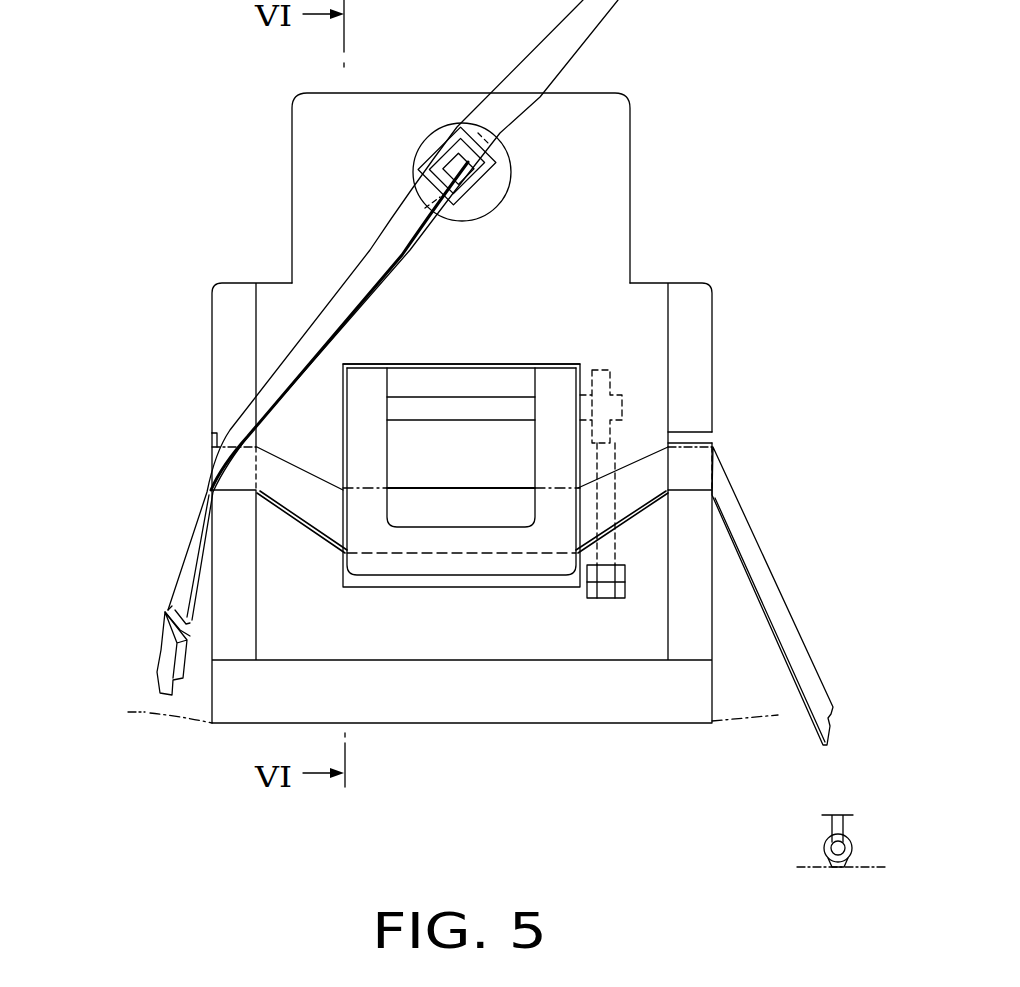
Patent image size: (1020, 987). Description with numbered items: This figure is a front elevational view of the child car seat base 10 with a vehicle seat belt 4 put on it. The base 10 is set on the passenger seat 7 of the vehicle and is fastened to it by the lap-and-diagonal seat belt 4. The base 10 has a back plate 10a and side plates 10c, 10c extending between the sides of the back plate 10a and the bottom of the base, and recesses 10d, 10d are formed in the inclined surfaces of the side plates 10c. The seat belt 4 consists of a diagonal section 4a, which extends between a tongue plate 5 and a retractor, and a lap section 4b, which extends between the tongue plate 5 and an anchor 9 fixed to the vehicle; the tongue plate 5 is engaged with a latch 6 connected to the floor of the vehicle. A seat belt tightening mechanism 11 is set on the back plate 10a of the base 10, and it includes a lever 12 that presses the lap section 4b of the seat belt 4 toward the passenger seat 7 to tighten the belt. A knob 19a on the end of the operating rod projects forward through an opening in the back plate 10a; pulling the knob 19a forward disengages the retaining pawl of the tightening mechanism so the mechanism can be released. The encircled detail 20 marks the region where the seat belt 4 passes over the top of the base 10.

The lap-and-diagonal seat belt 4 is at (340, 310).
The diagonal section 4a is at (213, 468).
The lap section 4b is at (290, 494).
The tongue plate 5 is at (165, 606).
The latch 6 is at (165, 648).
The passenger seat 7 is at (731, 742).
The anchor 9 is at (852, 845).
The base 10 is at (462, 374).
The back plate 10a is at (604, 108).
The side plates 10c is at (228, 315).
The recesses 10d is at (216, 438).
The seat belt tightening mechanism 11 is at (461, 438).
The lever 12 is at (372, 385).
The knob 19a is at (608, 578).
The buckle 20 is at (432, 116).